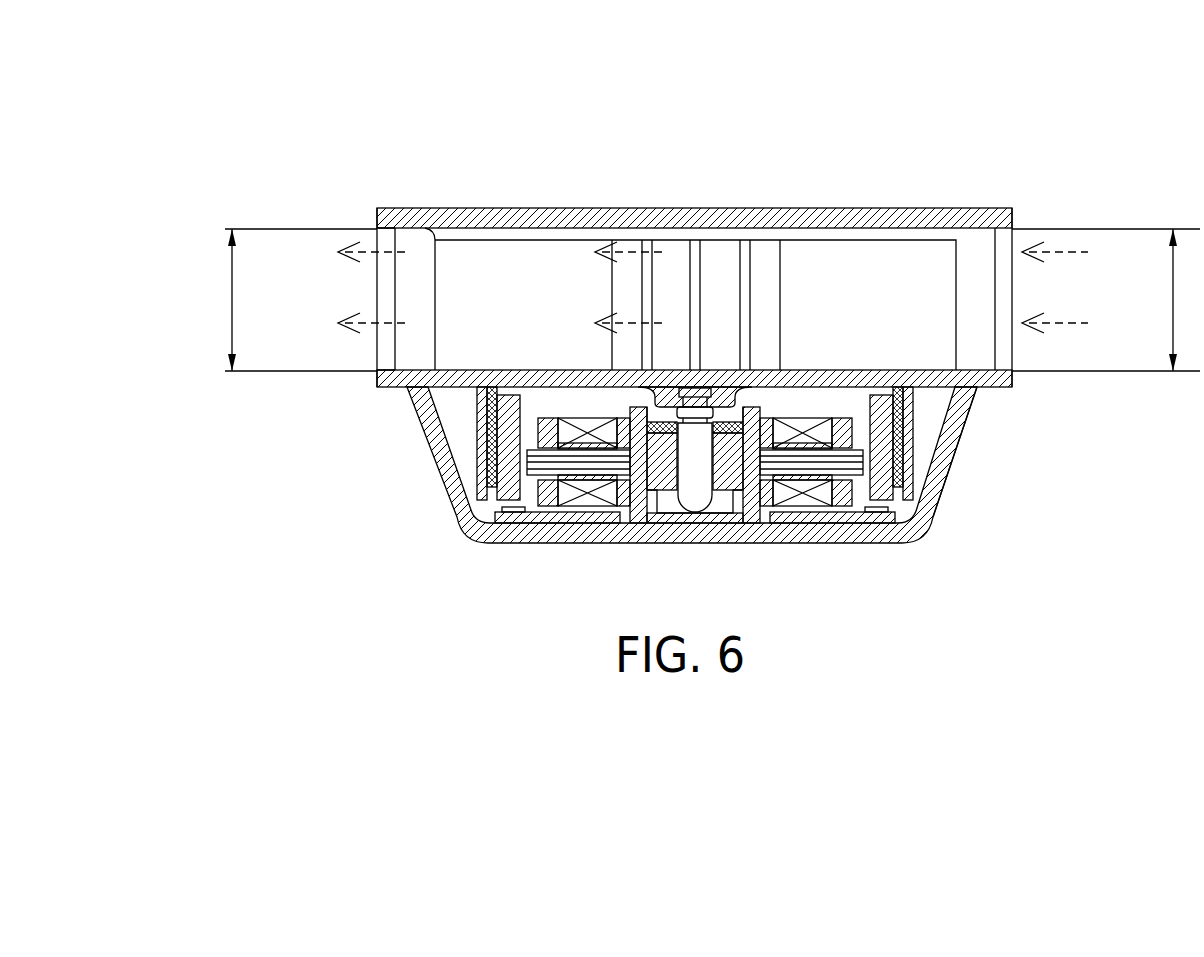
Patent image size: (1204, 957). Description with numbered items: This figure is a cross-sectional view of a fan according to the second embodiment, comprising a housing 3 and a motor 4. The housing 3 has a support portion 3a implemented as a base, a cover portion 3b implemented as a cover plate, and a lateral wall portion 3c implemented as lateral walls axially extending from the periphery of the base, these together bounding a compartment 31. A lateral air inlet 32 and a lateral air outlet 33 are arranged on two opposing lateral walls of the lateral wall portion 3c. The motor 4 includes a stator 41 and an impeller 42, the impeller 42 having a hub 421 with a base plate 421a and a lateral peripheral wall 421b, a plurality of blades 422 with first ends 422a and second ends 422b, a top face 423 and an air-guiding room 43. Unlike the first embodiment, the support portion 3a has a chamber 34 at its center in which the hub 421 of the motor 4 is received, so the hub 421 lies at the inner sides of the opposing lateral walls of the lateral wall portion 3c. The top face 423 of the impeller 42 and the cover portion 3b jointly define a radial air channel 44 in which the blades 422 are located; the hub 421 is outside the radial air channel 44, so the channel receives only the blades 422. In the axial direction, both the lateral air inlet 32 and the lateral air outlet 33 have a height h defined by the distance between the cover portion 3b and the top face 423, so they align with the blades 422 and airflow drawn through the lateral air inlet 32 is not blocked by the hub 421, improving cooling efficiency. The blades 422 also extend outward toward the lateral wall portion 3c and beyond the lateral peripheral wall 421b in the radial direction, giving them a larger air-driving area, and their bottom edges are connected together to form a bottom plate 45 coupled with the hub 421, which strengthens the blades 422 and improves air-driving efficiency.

The housing 3 is at (523, 197).
The support portion 3a is at (565, 533).
The cover portion 3b is at (557, 212).
The lateral wall portion 3c is at (378, 230).
The compartment 31 is at (415, 243).
The lateral air inlet 32 is at (1005, 297).
The lateral air outlet 33 is at (383, 281).
The chamber 34 is at (935, 418).
The motor 4 is at (715, 205).
The stator 41 is at (762, 355).
The impeller 42 is at (922, 86).
The hub 421 is at (915, 417).
The base plate 421a is at (797, 378).
The lateral peripheral wall 421b is at (907, 457).
The blades 422 is at (917, 265).
The first ends 422a is at (418, 242).
The second ends 422b is at (612, 240).
The top face 423 is at (885, 370).
The air-guiding room 43 is at (717, 277).
The radial air channel 44 is at (678, 235).
The bottom plate 45 is at (453, 378).
The height h is at (703, 300).